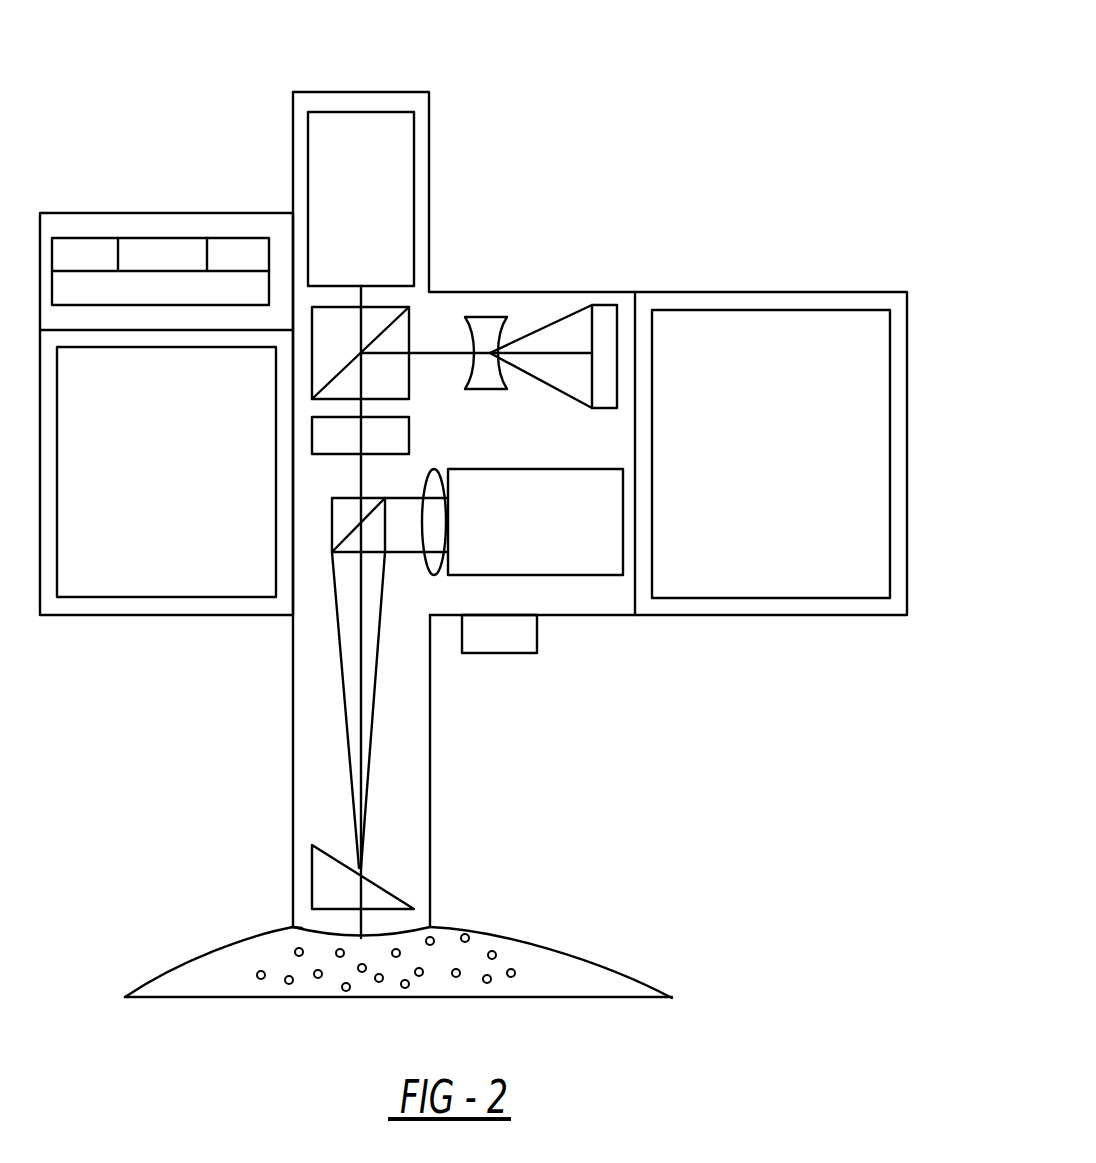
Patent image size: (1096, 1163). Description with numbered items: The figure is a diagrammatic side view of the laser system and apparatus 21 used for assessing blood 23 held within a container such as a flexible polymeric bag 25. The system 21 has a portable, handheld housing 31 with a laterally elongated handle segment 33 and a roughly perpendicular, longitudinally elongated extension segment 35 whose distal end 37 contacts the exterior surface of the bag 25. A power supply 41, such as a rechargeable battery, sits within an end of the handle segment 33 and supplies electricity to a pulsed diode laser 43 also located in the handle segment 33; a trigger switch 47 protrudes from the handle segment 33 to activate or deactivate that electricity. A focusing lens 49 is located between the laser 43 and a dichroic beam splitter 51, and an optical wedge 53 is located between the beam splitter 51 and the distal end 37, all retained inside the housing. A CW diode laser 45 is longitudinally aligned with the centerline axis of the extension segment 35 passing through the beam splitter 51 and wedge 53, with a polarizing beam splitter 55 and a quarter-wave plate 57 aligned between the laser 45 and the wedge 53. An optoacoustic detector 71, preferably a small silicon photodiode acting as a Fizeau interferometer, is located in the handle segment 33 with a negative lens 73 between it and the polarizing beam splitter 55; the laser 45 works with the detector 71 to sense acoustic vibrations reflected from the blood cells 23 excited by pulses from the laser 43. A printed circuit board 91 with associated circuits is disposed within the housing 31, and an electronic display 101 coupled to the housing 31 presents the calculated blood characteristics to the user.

The laser system and apparatus 21 is at (648, 107).
The blood 23 is at (467, 931).
The flexible polymeric bag 25 is at (600, 960).
The housing 31 is at (527, 292).
The handle segment 33 is at (620, 615).
The extension segment 35 is at (293, 803).
The distal end 37 is at (302, 928).
The power supply 41 is at (752, 507).
The laser 43 is at (547, 525).
The CW diode laser 45 is at (333, 240).
The trigger switch 47 is at (498, 643).
The focusing lens 49 is at (427, 577).
The dichroic beam splitter 51 is at (345, 535).
The optical wedge 53 is at (312, 877).
The polarizing beam splitter 55 is at (342, 370).
The quarter-wave plate 57 is at (312, 435).
The optoacoustic detector 71 is at (605, 305).
The negative lens 73 is at (487, 318).
The printed circuit board 91 is at (143, 497).
The electronic display 101 is at (92, 250).